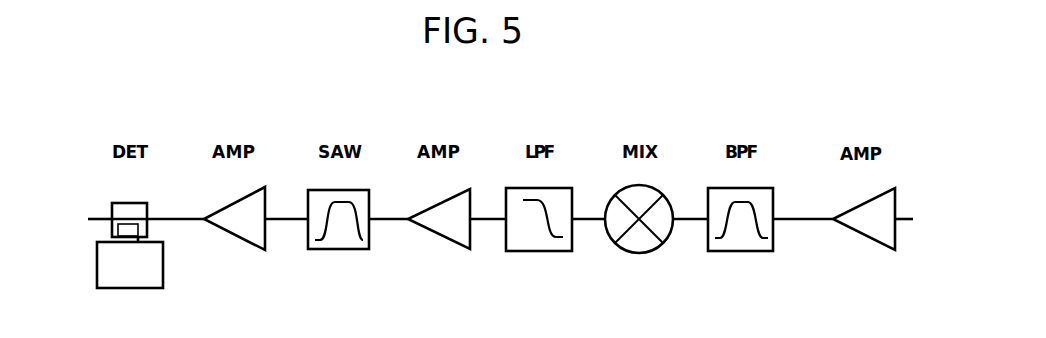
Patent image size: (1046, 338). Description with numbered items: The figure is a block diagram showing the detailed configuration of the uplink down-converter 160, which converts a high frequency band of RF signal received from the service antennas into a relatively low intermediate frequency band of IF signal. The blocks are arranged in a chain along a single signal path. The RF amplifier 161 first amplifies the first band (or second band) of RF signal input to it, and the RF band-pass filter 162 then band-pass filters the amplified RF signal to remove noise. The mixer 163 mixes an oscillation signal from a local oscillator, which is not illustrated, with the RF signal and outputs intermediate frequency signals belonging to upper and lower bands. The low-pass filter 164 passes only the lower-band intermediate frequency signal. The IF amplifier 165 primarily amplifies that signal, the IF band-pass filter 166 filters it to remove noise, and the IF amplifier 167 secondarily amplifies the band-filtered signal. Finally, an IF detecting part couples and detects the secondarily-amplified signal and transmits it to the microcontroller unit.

The uplink down-converter 160 is at (472, 85).
The RF amplifier 161 is at (870, 247).
The RF band-pass filter 162 is at (728, 258).
The mixer 163 is at (638, 255).
The low-pass filter 164 is at (525, 257).
The IF amplifier 165 is at (442, 243).
The IF band-pass filter 166 is at (333, 257).
The IF amplifier 167 is at (245, 250).